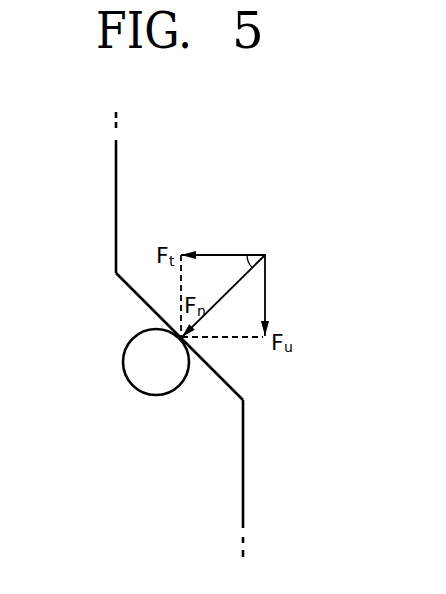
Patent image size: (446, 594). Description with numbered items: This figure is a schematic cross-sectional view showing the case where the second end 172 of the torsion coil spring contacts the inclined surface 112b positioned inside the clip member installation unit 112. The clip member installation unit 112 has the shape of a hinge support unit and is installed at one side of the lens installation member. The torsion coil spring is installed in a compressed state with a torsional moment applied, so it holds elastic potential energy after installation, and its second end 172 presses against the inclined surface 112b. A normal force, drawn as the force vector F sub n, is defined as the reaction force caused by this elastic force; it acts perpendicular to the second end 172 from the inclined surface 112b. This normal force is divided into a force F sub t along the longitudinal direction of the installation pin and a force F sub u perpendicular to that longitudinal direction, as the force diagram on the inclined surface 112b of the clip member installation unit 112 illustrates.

The clip member installation unit 112 is at (335, 485).
The inclined surface 112b is at (218, 378).
The second end 172 is at (140, 378).